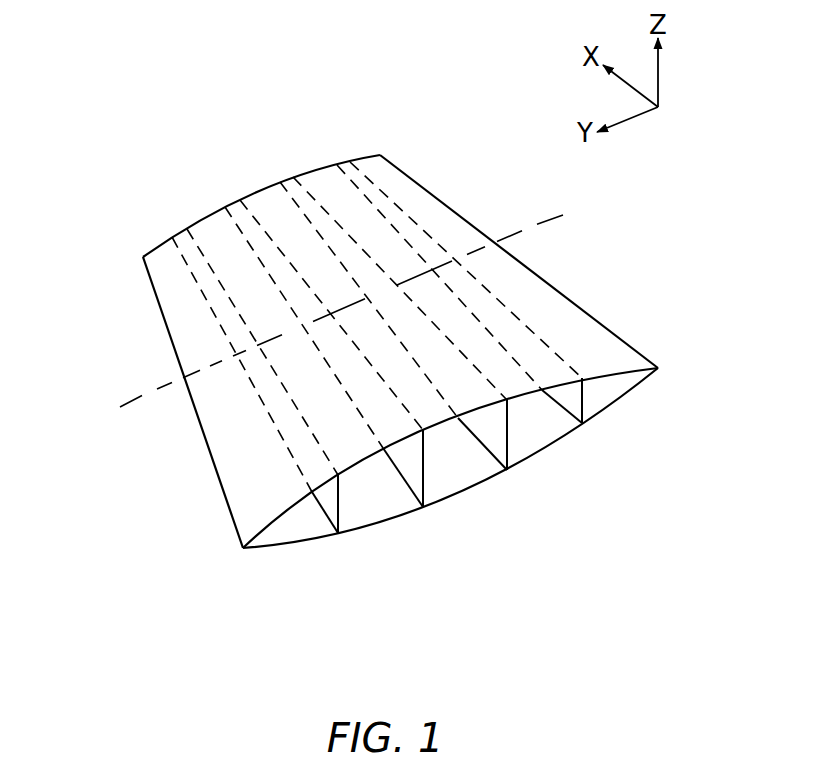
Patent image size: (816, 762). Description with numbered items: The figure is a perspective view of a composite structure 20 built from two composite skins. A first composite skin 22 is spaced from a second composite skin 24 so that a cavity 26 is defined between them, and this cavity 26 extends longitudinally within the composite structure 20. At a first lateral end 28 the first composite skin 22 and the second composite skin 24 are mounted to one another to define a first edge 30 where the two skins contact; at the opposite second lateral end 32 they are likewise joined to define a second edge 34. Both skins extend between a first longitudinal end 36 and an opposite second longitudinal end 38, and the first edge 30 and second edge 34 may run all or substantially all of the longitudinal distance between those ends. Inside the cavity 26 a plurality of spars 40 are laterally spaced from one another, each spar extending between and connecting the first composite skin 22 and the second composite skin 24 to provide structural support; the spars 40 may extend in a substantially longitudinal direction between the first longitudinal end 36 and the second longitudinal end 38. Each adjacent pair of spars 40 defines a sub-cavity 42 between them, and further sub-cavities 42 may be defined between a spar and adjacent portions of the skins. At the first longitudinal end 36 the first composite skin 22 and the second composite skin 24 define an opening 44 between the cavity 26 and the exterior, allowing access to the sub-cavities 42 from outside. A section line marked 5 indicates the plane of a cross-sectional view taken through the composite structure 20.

The composite structure 20 is at (112, 148).
The first composite skin 22 is at (395, 180).
The second composite skin 24 is at (280, 532).
The cavity 26 is at (472, 467).
The first lateral end 28 is at (197, 515).
The first edge 30 is at (213, 470).
The second lateral end 32 is at (637, 332).
The second edge 34 is at (592, 312).
The first longitudinal end 36 is at (570, 455).
The second longitudinal end 38 is at (258, 172).
The plurality of spars 40 is at (402, 467).
The sub-cavity 42 is at (600, 393).
The opening 44 is at (457, 517).
The section line 5- 5 is at (120, 407).